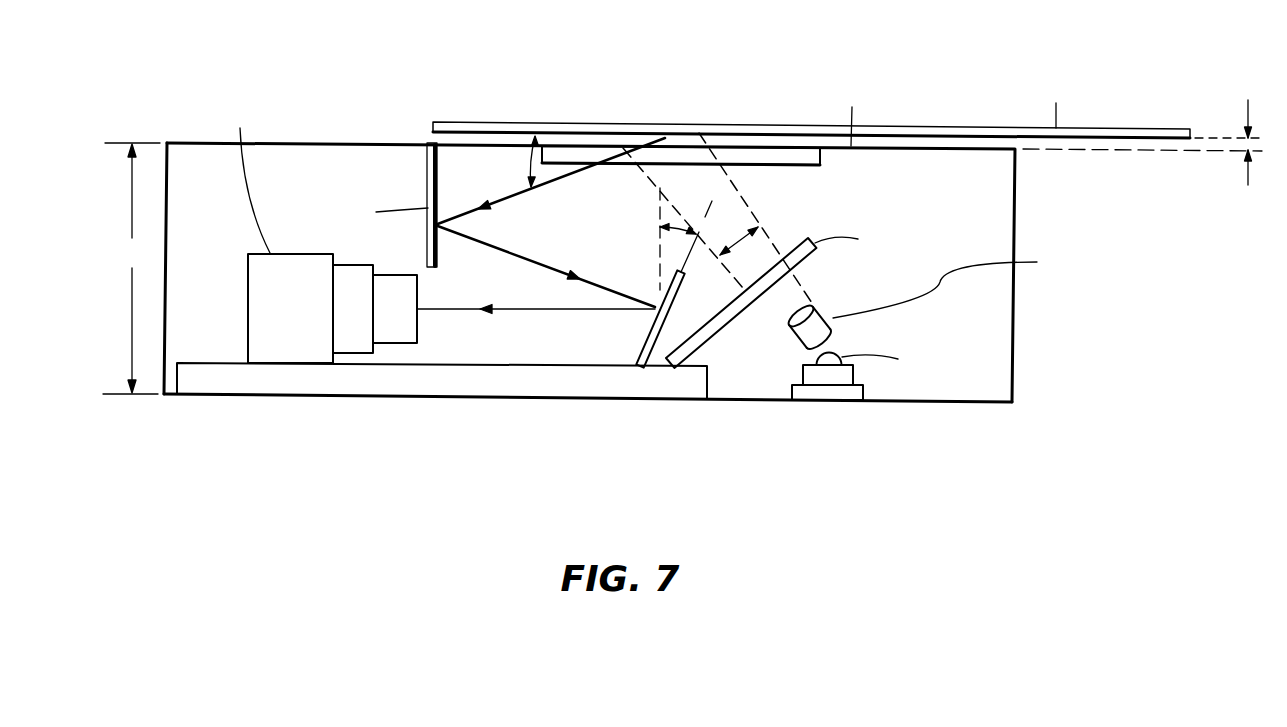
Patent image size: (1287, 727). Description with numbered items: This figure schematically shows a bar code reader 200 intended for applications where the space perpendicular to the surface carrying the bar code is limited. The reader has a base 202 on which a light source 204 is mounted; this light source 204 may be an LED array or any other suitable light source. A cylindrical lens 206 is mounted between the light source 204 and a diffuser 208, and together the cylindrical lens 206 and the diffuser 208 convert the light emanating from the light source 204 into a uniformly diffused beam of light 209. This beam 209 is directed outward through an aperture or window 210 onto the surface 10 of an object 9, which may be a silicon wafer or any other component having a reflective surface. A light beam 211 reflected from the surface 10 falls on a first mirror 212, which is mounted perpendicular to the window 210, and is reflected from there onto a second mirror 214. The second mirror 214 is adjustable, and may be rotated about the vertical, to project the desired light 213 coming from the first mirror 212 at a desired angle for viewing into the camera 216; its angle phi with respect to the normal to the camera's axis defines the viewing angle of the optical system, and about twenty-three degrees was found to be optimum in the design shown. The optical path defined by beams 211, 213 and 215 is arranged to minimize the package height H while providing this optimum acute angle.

The object 9 is at (1168, 128).
The surface 10 is at (1100, 140).
The bar code reader 200 is at (1015, 358).
The base 202 is at (950, 402).
The light source 204 is at (842, 376).
The cylindrical lens 206 is at (814, 306).
The diffuser 208 is at (807, 238).
The uniformly diffused beam of light 209 is at (742, 233).
The window 210 is at (822, 153).
The reflected light beam 211 is at (495, 198).
The first mirror 212 is at (425, 167).
The light 213 is at (488, 243).
The second mirror 214 is at (672, 278).
The optical path segment 215 is at (450, 308).
The camera 216 is at (292, 337).